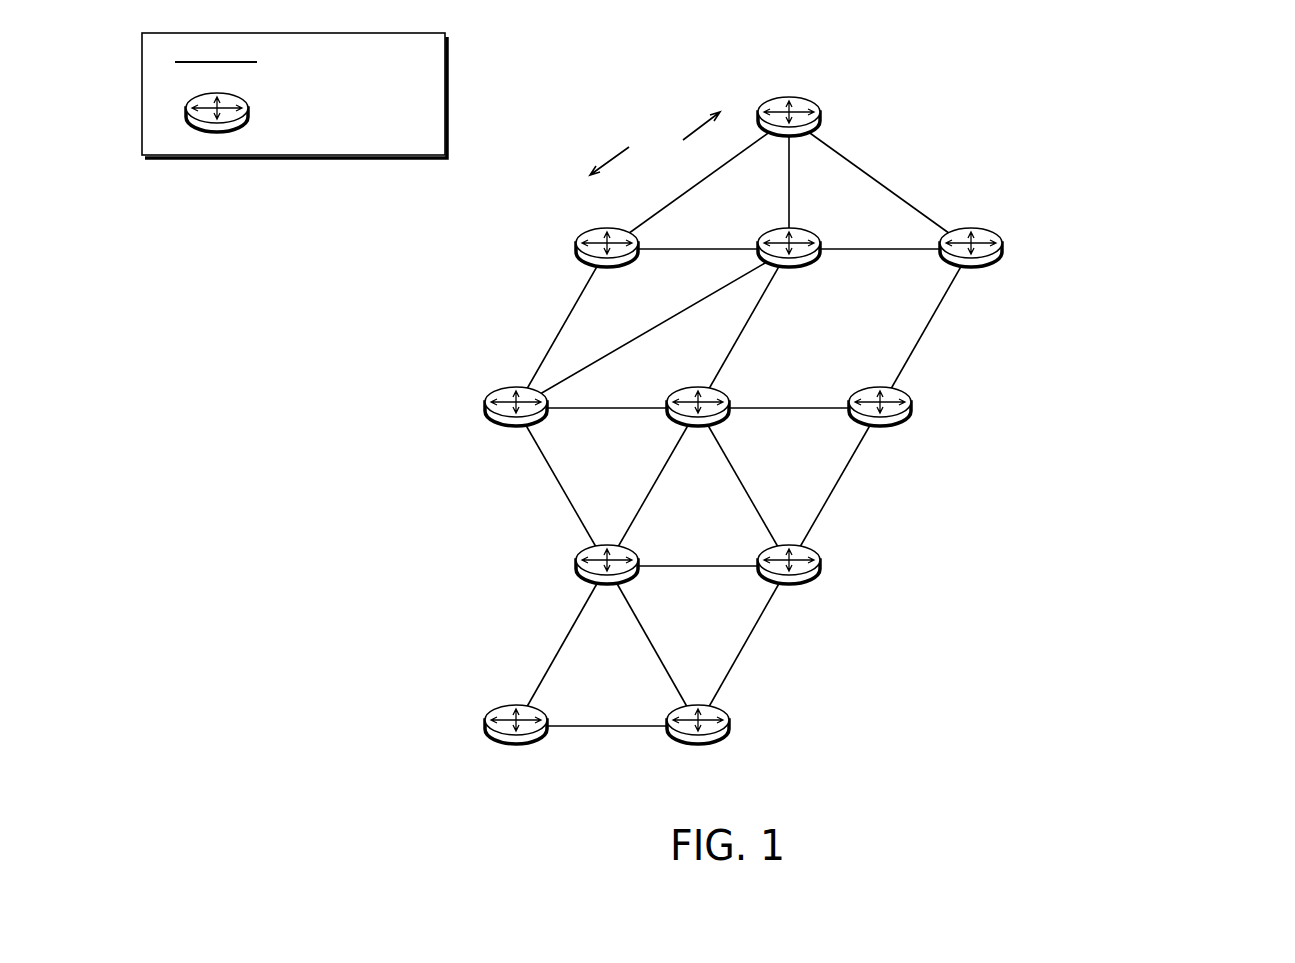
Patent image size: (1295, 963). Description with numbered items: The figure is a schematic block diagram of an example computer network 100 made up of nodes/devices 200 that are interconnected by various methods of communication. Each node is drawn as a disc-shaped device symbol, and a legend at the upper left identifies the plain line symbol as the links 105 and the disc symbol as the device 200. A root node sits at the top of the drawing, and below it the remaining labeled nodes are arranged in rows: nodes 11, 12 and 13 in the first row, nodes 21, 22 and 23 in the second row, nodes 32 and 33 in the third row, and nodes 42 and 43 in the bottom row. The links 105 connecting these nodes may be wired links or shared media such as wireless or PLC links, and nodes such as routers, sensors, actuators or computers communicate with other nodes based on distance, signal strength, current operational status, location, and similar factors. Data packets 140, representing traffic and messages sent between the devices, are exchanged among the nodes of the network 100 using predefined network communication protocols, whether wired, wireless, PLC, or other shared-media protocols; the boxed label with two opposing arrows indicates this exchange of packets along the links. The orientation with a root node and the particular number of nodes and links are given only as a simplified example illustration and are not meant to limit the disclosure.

The computer network 100 is at (1212, 88).
The links 105 is at (573, 388).
The nodes/devices 200 is at (302, 112).
The data packets 140 is at (639, 157).
The node 11 is at (607, 267).
The node 12 is at (789, 267).
The node 13 is at (971, 266).
The node 21 is at (516, 425).
The node 22 is at (698, 425).
The node 23 is at (880, 425).
The node 32 is at (607, 583).
The node 33 is at (789, 583).
The node 42 is at (516, 743).
The node 43 is at (698, 743).